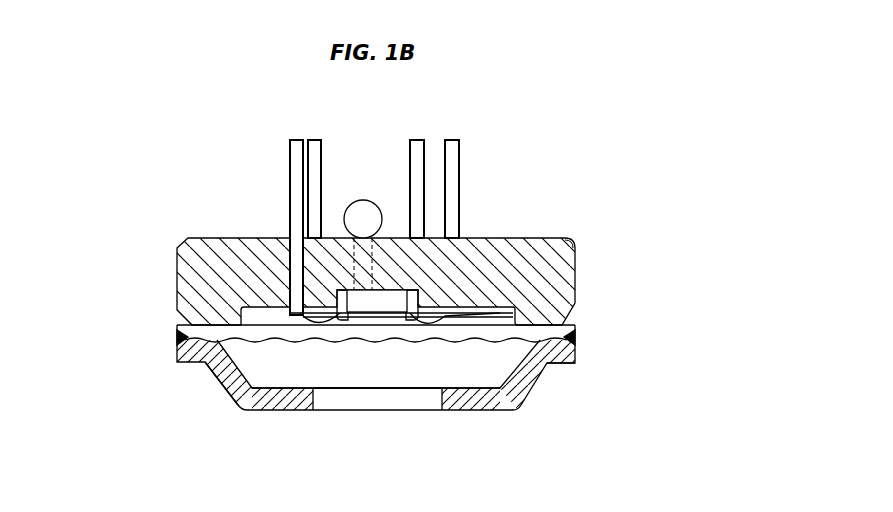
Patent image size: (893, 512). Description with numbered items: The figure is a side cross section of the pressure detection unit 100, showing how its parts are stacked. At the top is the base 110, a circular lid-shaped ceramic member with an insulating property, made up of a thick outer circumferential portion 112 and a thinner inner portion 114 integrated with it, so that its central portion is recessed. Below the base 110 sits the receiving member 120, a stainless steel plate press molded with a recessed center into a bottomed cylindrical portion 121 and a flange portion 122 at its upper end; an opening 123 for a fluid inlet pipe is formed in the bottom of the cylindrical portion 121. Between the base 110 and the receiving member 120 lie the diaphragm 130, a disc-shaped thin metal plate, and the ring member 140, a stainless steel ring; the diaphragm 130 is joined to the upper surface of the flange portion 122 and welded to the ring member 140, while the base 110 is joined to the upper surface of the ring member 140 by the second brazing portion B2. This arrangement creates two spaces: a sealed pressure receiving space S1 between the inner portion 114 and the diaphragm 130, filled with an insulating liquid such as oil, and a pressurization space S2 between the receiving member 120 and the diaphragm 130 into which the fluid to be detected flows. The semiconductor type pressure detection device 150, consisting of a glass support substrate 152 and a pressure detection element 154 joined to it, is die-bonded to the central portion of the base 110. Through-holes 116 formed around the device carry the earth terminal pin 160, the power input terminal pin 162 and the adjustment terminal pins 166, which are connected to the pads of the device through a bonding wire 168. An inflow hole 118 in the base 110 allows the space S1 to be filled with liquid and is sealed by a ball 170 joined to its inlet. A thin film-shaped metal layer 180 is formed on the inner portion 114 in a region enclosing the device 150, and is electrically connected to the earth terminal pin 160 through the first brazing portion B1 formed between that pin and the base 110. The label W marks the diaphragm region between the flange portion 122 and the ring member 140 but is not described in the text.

The pressure detection unit 100 is at (604, 172).
The base 110 is at (222, 247).
The outer circumferential portion 112 is at (556, 283).
The inner portion 114 is at (275, 298).
The through-holes 116 is at (287, 270).
The inflow hole 118 is at (388, 237).
The receiving member 120 is at (515, 402).
The cylindrical portion 121 is at (282, 410).
The flange portion 122 is at (555, 362).
The opening 123 is at (428, 408).
The diaphragm 130 is at (270, 343).
The ring member 140 is at (195, 327).
The semiconductor type pressure detection device 150 is at (373, 320).
The support substrate 152 is at (393, 292).
The pressure detection element 154 is at (392, 318).
The earth terminal pin 160 is at (290, 157).
The power input terminal pin 162 is at (320, 150).
The adjustment terminal pins 166 is at (458, 140).
The bonding wire 168 is at (320, 365).
The ball 170 is at (363, 200).
The metal layer 180 is at (503, 322).
The first brazing portion B1 is at (285, 300).
The second brazing portion B2 is at (540, 320).
The pressure receiving space S1 is at (483, 305).
The pressurization space S2 is at (483, 372).
The workpiece W is at (580, 337).